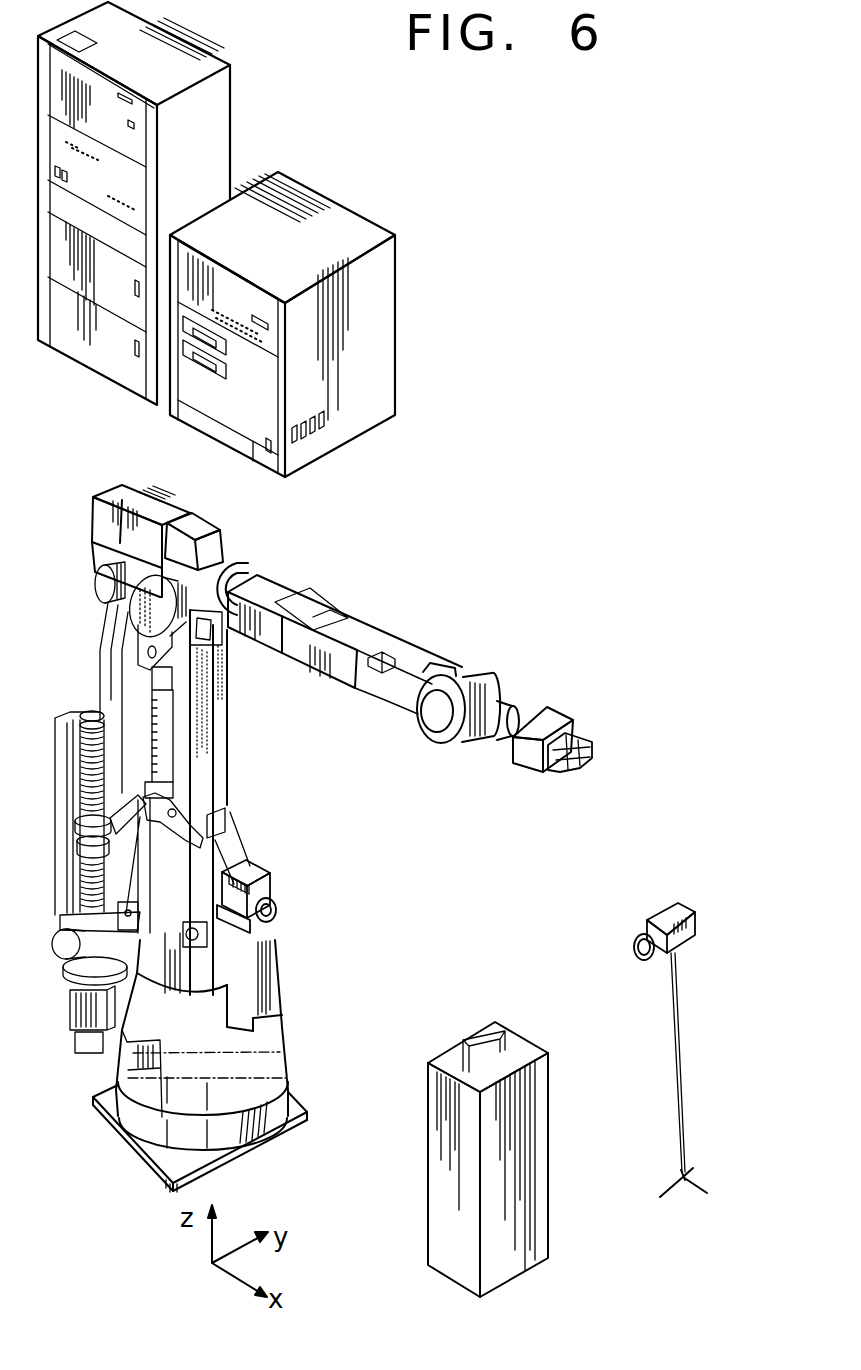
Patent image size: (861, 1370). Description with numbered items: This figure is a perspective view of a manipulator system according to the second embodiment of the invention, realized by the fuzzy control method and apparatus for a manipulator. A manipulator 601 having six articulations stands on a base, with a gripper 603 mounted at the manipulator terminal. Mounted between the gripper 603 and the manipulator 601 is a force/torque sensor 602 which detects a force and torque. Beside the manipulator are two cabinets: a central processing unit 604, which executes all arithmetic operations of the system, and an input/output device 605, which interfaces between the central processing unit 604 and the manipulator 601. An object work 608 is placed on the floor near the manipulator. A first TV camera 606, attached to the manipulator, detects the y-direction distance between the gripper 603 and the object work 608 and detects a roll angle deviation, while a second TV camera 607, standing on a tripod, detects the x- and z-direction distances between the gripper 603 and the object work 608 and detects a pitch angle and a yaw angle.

The manipulator 601 is at (360, 628).
The force/torque sensor 602 is at (522, 713).
The gripper 603 is at (583, 765).
The central processing unit 604 is at (378, 302).
The input/output device 605 is at (212, 143).
The TV camera (1) 606 is at (270, 887).
The TV camera (2) 607 is at (657, 913).
The object work 608 is at (518, 1047).